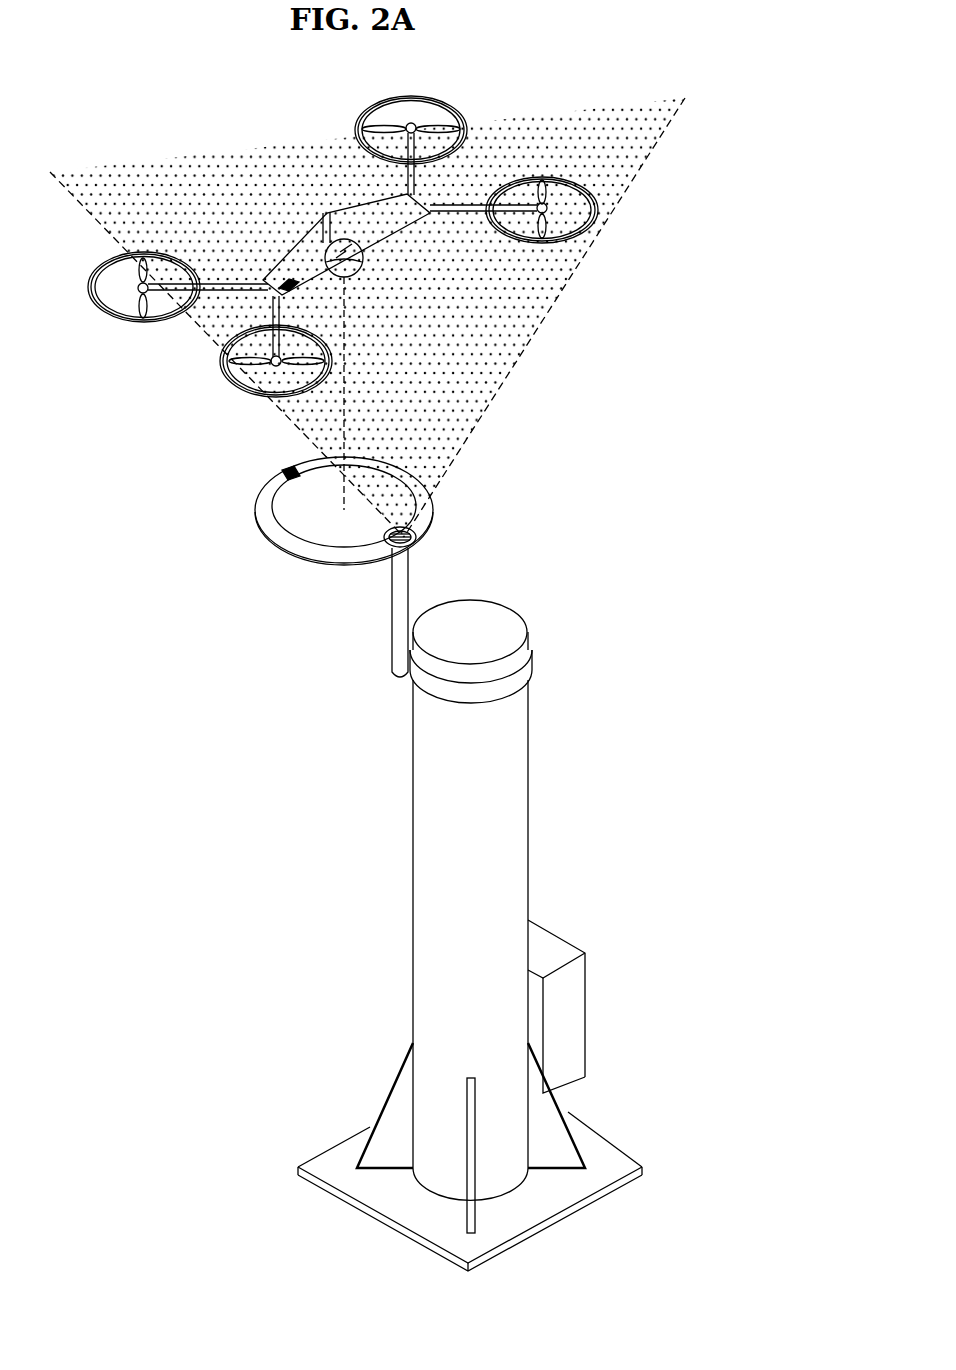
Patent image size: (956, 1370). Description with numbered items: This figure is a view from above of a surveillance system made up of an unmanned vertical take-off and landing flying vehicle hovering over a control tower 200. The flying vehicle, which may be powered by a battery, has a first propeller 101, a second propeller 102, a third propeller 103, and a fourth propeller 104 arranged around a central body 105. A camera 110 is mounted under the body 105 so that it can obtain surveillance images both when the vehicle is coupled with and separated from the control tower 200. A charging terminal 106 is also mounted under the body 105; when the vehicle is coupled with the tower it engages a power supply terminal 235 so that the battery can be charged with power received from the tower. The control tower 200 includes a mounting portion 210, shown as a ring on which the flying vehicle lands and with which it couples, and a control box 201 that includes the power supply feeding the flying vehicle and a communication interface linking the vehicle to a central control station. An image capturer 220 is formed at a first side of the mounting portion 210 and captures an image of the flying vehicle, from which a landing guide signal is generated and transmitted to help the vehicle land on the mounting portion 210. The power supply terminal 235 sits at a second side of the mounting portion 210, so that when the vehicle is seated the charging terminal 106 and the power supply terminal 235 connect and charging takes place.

The first propeller 101 is at (418, 96).
The second propeller 102 is at (548, 180).
The third propeller 103 is at (222, 372).
The fourth propeller 104 is at (110, 312).
The body 105 is at (348, 215).
The charging terminal 106 is at (283, 283).
The camera 110 is at (358, 272).
The control tower 200 is at (370, 762).
The control box 201 is at (584, 1003).
The mounting portion 210 is at (292, 545).
The image capturer 220 is at (417, 537).
The power supply terminal 235 is at (284, 470).